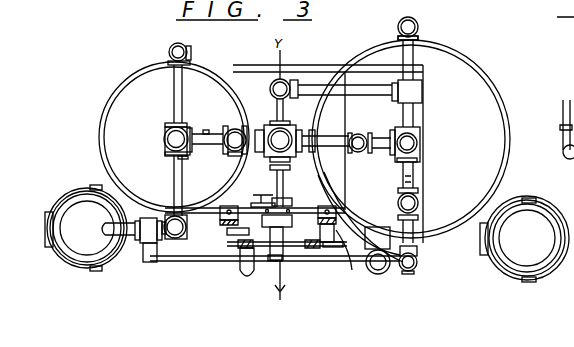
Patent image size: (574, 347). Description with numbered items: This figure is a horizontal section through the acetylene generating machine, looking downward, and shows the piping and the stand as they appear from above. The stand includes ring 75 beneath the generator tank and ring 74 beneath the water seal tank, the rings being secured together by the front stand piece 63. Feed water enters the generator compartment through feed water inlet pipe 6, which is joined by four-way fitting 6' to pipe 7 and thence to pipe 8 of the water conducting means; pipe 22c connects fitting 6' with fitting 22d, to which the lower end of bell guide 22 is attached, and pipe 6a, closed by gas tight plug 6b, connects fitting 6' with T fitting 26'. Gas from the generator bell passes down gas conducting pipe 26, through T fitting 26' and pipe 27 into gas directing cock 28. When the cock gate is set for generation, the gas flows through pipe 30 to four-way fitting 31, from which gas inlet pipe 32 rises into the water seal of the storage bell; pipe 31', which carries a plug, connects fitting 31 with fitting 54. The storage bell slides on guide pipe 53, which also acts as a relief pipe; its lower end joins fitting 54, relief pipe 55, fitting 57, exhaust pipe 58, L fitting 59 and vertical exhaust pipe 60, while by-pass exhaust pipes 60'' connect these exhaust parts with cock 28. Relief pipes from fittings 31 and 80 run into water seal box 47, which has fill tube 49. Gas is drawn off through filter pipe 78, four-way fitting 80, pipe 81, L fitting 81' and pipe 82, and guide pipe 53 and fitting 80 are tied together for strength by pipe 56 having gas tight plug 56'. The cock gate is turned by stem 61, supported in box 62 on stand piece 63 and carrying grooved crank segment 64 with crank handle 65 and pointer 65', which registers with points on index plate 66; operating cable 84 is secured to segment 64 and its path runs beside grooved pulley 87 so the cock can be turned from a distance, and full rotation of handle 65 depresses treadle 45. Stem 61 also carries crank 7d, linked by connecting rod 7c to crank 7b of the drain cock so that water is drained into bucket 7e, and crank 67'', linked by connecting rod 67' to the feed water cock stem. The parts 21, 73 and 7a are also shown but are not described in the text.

The ring 75 is at (104, 121).
The ring 74 is at (508, 138).
The bell guide 22 is at (168, 53).
The fitting 22d is at (191, 55).
The pipe 22c is at (183, 90).
The feed water inlet pipe 6 is at (166, 133).
The four-way fitting 6' is at (164, 149).
The pipe 6a is at (190, 147).
The gas tight plug 6b is at (205, 130).
The pipe 21 is at (207, 139).
The gas conducting pipe 26 is at (232, 130).
The T fitting 26' is at (227, 161).
The pipe 7 is at (183, 185).
The pipe 8 is at (172, 218).
The pipe 27 is at (272, 98).
The gas directing cock 28 is at (275, 124).
The by pass exhaust pipes 60'' is at (340, 91).
The vertical exhaust pipe 60 is at (393, 28).
The L fitting 59 is at (419, 30).
The exhaust pipe 58 is at (414, 60).
The fitting 57 is at (423, 89).
The relief pipe 55 is at (414, 113).
The pipe 30 is at (328, 136).
The gas inlet pipe 32 is at (357, 133).
The four-way fitting 31 is at (375, 156).
The pipe 31' is at (390, 133).
The water seal box 47 is at (424, 132).
The guide pipe 53 is at (420, 143).
The fitting 54 is at (420, 158).
The pipe 56 is at (424, 175).
The gas tight plug 56' is at (424, 180).
The four-way fitting 80 is at (419, 190).
The filter pipe 78 is at (419, 203).
The pipe 81 is at (424, 238).
The L fitting 81' is at (420, 262).
The pipe 82 is at (415, 270).
The cylinder 73 is at (490, 262).
The stem 61 is at (284, 190).
The connecting rod 67' is at (263, 191).
The crank 67'' is at (290, 199).
The index plate 66 is at (340, 210).
The box 62 is at (285, 222).
The stand piece 63 is at (222, 218).
The pointer 65' is at (279, 243).
The crank handle 65 is at (248, 275).
The grooved crank segment 64 is at (290, 282).
The connecting rod 7c is at (221, 263).
The crank 7d is at (270, 262).
The bucket 7e is at (113, 262).
The pipe 7a is at (137, 242).
The crank 7b is at (157, 253).
The grooved pulley 87 is at (330, 246).
The operating cable 84 is at (352, 270).
The treadle 45 is at (368, 250).
The fill tube 49 is at (385, 272).